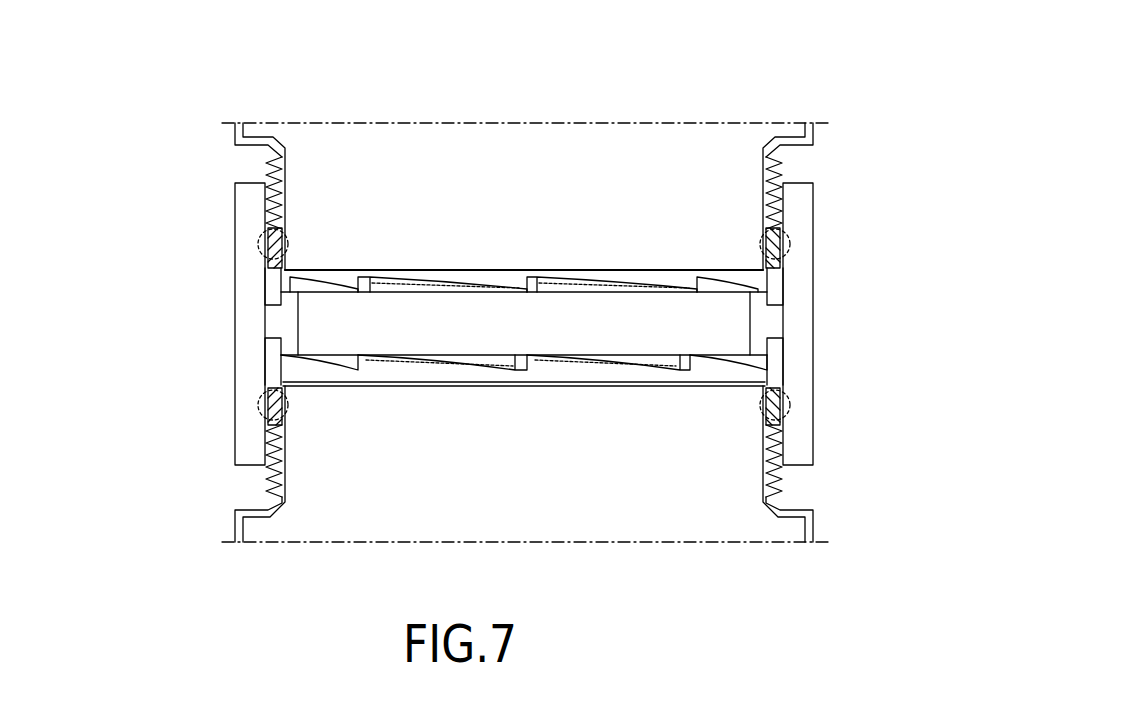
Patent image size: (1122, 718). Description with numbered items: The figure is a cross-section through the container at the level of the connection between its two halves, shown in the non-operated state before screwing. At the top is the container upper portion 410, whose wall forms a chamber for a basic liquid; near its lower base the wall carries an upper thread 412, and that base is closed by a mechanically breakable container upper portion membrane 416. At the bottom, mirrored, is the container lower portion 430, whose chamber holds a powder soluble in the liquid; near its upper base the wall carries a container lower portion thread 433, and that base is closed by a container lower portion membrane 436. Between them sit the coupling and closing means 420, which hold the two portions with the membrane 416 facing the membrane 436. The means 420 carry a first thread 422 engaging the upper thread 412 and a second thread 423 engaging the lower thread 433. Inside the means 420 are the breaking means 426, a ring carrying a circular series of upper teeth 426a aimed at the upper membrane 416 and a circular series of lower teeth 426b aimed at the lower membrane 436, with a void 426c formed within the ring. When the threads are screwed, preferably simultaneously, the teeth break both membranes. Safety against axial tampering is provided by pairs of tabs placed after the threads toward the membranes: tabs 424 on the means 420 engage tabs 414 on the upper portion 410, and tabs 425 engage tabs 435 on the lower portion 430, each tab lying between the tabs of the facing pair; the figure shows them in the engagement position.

The container upper portion 410 is at (560, 178).
The upper thread 412 is at (278, 173).
The tabs on the upper portion 414 is at (555, 219).
The container upper portion membrane 416 is at (480, 268).
The coupling and closing means 420 is at (233, 322).
The first thread 422 is at (262, 207).
The second thread 423 is at (265, 435).
The tabs on the coupling means 424 is at (256, 250).
The tabs on the coupling means 425 is at (257, 402).
The breaking means 426 is at (285, 323).
The upper teeth 426a is at (292, 272).
The lower teeth 426b is at (515, 363).
The void 426c is at (540, 335).
The container lower portion 430 is at (525, 522).
The container lower portion thread 433 is at (278, 488).
The tabs on the lower portion 435 is at (539, 409).
The container lower portion membrane 436 is at (577, 387).